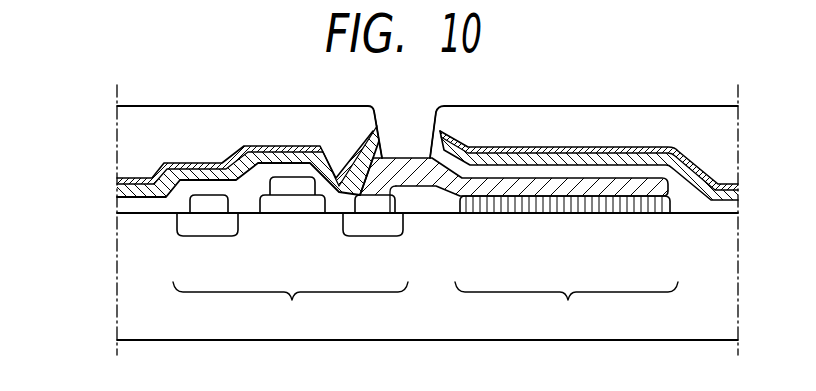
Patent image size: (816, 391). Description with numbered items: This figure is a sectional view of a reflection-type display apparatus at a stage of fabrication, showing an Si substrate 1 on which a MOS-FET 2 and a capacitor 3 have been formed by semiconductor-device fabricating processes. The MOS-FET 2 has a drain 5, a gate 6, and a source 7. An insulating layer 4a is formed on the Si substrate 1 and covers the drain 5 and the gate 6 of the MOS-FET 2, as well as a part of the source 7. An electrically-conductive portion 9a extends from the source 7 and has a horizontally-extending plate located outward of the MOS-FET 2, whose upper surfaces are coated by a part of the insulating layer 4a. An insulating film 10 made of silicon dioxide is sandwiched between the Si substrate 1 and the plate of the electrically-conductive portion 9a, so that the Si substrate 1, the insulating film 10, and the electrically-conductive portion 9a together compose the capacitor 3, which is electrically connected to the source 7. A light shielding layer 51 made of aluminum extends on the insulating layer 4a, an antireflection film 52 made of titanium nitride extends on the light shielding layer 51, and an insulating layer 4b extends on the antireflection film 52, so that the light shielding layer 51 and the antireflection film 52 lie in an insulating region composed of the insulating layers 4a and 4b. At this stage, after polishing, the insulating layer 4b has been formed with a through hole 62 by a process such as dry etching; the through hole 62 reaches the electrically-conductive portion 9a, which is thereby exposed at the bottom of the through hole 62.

The Si substrate 1 is at (117, 286).
The MOS-FET 2 is at (293, 302).
The capacitor 3 is at (569, 302).
The insulating layer 4a is at (120, 207).
The insulating layer 4b is at (122, 143).
The drain 5 is at (206, 228).
The gate 6 is at (290, 205).
The source 7 is at (365, 228).
The electrically-conductive portion 9a is at (493, 200).
The insulating film 10 is at (591, 207).
The light shielding layer 51 is at (614, 158).
The antireflection film 52 is at (559, 150).
The through hole 62 is at (404, 138).